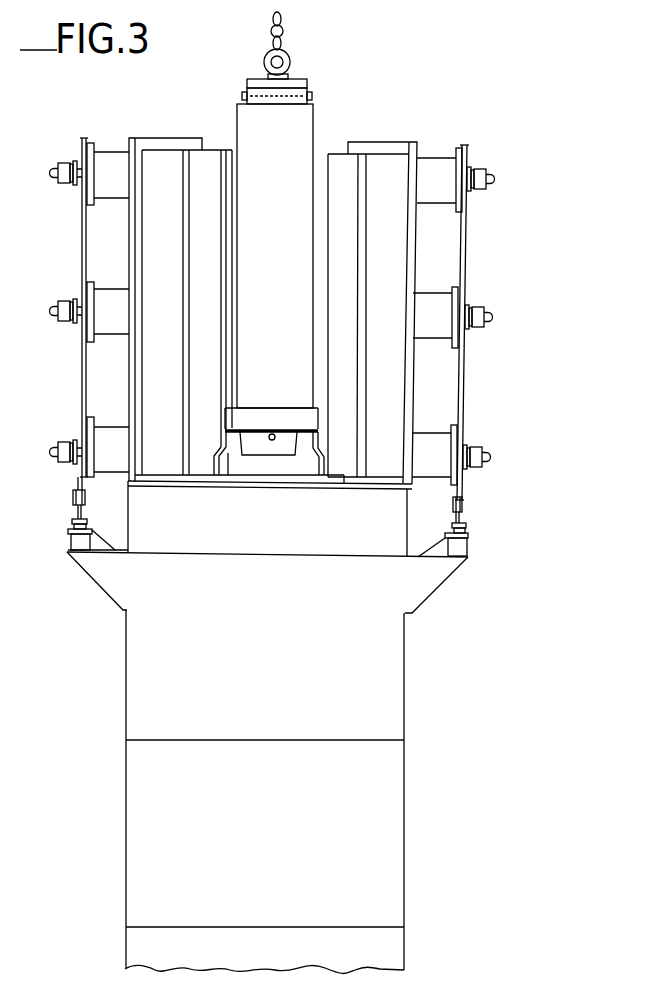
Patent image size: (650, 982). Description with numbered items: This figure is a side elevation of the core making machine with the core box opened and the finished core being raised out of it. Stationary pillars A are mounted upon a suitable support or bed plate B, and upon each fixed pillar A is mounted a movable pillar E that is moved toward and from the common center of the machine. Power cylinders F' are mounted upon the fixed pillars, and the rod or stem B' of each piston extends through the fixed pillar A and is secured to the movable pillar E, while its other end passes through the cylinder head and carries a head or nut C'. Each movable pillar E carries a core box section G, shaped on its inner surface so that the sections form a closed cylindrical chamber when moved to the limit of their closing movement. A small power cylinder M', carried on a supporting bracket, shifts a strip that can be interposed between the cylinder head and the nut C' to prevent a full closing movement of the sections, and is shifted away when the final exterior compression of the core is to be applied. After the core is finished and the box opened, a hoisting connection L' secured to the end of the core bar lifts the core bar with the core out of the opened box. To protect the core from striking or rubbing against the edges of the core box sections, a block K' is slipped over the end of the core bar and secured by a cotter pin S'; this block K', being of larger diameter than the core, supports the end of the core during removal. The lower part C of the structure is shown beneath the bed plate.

The hoisting connection L' is at (298, 45).
The core box section G is at (213, 163).
The block K' is at (271, 399).
The cotter pin S' is at (265, 475).
The movable pillar E is at (182, 242).
The stationary pillar A is at (128, 377).
The cylinder F' is at (274, 314).
The head or nut C' is at (273, 298).
The piston rod B' is at (267, 321).
The bed plate B is at (267, 547).
The small power cylinder M' is at (262, 517).
The pier column C is at (264, 792).